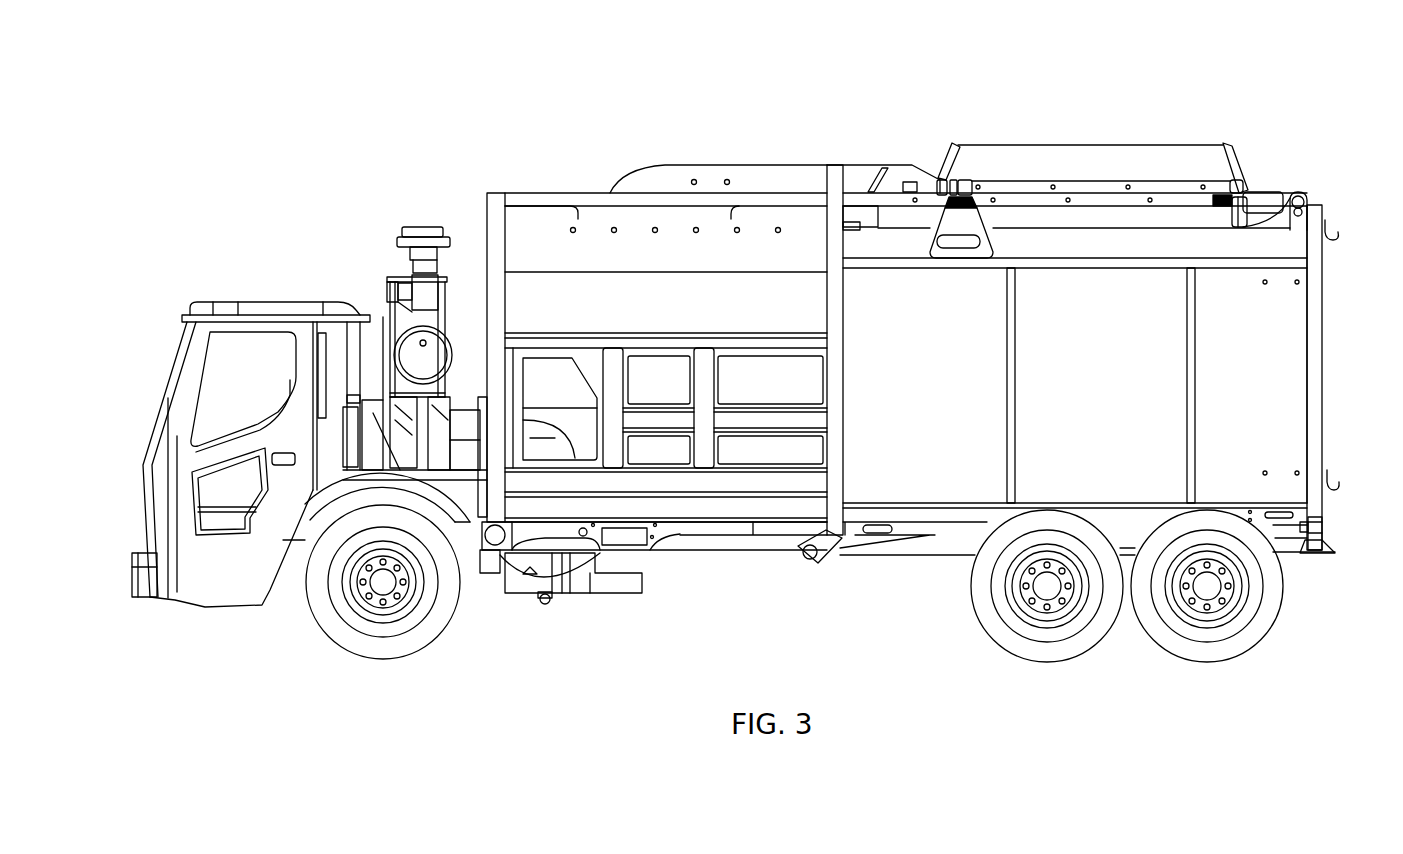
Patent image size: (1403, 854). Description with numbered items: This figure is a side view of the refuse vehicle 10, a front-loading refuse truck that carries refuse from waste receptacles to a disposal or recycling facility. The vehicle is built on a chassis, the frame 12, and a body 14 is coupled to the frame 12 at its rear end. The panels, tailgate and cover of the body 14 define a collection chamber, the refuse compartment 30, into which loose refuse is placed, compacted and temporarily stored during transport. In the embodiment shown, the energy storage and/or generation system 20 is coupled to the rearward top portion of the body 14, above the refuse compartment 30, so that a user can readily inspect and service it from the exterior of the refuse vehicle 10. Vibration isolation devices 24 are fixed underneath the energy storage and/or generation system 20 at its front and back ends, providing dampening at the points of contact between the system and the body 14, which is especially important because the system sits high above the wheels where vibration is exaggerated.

The refuse vehicle 10 is at (1286, 87).
The frame 12 is at (732, 547).
The body 14 is at (532, 202).
The energy storage and/or generation system 20 is at (1018, 160).
The vibration isolation devices 24 is at (945, 180).
The refuse compartment 30 is at (1278, 367).